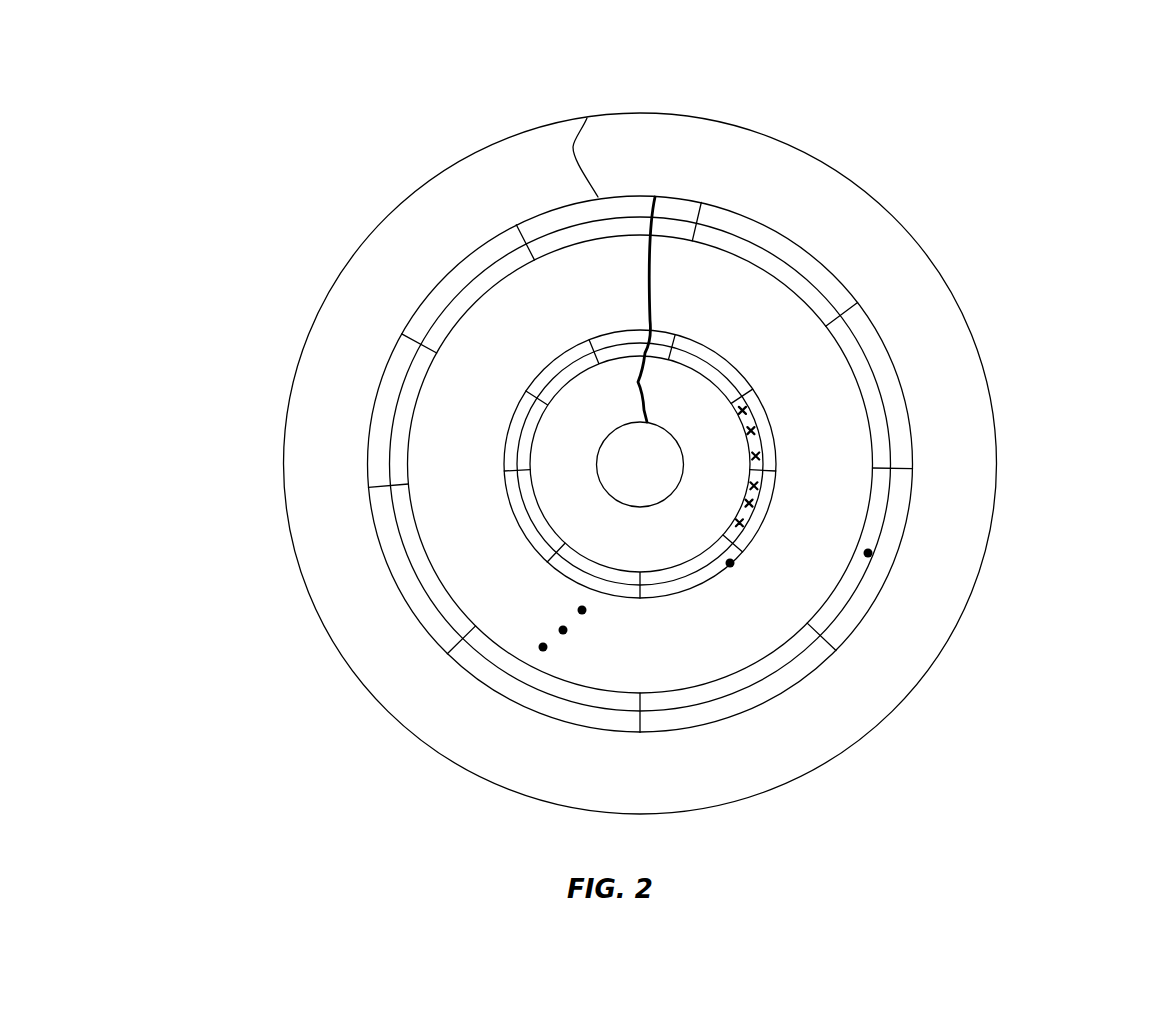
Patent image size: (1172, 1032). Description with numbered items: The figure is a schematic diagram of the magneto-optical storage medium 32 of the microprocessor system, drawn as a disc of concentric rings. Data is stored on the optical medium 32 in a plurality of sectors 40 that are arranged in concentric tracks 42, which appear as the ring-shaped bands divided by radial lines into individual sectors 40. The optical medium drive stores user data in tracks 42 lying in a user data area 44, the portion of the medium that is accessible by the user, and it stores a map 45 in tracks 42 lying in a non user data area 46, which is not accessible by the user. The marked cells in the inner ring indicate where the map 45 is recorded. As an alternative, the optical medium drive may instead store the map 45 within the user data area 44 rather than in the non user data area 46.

The magneto-optical storage medium 32 is at (784, 252).
The sectors 40 is at (858, 355).
The concentric tracks 42 is at (680, 582).
The user data area 44 is at (635, 309).
The map 45 is at (753, 447).
The non user data area 46 is at (567, 150).